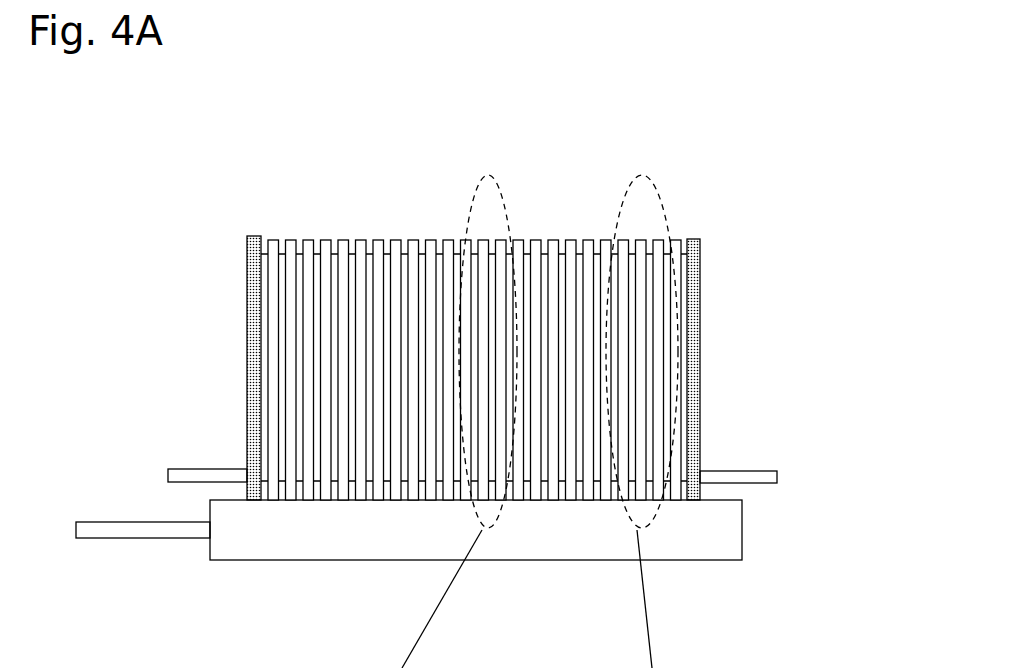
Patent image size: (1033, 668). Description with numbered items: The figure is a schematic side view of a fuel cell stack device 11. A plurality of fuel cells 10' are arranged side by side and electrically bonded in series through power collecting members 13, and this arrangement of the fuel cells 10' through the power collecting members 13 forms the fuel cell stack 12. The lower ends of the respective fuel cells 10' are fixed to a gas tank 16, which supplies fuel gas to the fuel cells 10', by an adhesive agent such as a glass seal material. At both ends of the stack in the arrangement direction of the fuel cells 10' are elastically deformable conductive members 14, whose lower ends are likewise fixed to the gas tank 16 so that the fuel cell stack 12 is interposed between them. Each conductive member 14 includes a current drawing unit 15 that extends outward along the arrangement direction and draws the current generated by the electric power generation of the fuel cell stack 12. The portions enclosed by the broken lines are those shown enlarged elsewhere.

The fuel cell stack device 11 is at (279, 94).
The fuel cell stack 12 is at (248, 222).
The power collecting member 13 is at (397, 268).
The conductive member 14 is at (700, 352).
The current drawing unit 15 is at (742, 477).
The gas tank 16 is at (742, 540).
The fuel cell 10' is at (540, 397).